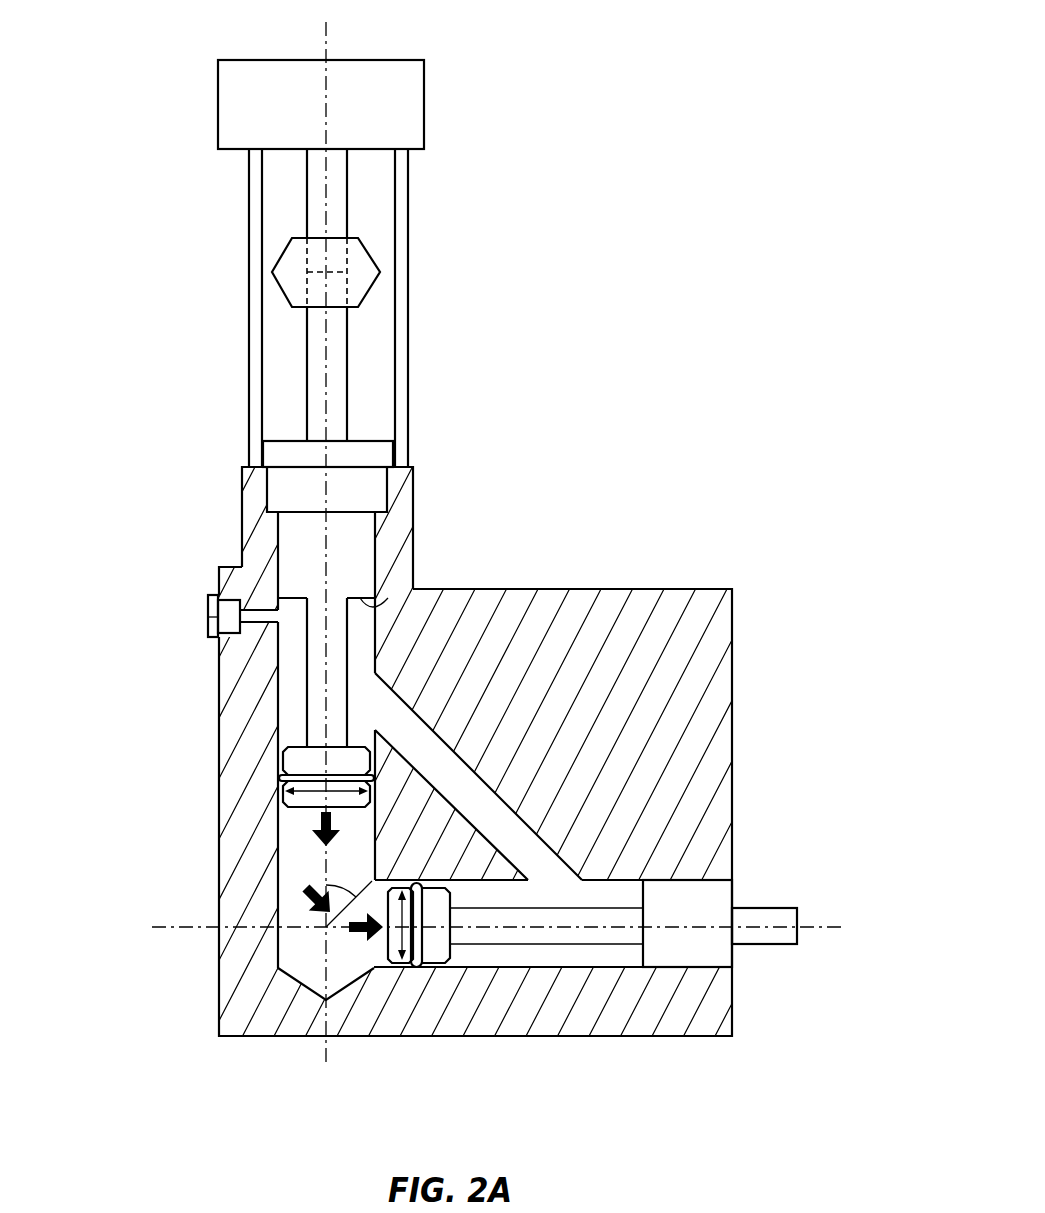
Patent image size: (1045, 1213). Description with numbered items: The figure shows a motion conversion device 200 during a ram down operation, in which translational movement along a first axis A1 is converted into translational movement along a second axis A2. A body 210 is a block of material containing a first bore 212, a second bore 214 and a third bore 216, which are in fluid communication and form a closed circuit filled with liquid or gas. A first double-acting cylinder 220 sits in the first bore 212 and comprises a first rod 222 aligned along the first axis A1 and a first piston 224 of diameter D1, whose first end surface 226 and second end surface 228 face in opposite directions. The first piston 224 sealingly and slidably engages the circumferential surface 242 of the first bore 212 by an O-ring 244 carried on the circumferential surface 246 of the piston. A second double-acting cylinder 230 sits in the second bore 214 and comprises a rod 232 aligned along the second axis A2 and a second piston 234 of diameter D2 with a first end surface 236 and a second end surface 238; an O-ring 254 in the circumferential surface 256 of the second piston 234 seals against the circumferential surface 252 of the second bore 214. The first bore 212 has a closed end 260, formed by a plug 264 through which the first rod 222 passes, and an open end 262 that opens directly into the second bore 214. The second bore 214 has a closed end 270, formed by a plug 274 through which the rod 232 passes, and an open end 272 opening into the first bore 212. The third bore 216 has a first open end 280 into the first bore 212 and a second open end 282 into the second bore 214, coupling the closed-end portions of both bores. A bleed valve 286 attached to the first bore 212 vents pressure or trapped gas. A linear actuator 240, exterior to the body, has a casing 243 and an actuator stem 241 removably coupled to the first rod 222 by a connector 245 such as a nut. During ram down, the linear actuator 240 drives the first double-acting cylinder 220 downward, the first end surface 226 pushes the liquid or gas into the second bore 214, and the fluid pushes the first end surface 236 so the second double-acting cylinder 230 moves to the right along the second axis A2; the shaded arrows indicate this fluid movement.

The motion conversion device 200 is at (144, 432).
The body 210 is at (643, 589).
The first bore 212 is at (292, 882).
The second bore 214 is at (538, 969).
The third bore 216 is at (524, 589).
The first double-acting cylinder 220 is at (296, 708).
The first rod 222 is at (315, 372).
The first piston 224 is at (312, 778).
The first end surface 226 is at (303, 807).
The second end surface 228 is at (308, 742).
The second double-acting cylinder 230 is at (568, 956).
The rod 232 is at (632, 935).
The second piston 234 is at (415, 968).
The first end surface 236 is at (370, 970).
The second end surface 238 is at (456, 1008).
The linear actuator 240 is at (453, 92).
The actuator stem 241 is at (338, 206).
The circumferential surface 242 is at (283, 808).
The casing 243 is at (218, 104).
The O-ring 244 is at (284, 782).
The connector 245 is at (280, 257).
The circumferential surface 246 is at (303, 752).
The circumferential surface 252 is at (594, 962).
The O-ring 254 is at (406, 964).
The circumferential surface 256 is at (436, 964).
The closed end 260 is at (364, 603).
The open end 262 is at (300, 868).
The plug 264 is at (293, 526).
The closed end 270 is at (646, 880).
The open end 272 is at (322, 1003).
The plug 274 is at (722, 953).
The first open end 280 is at (392, 600).
The second open end 282 is at (646, 898).
The bleed valve 286 is at (212, 594).
The first axis A1 is at (328, 272).
The second axis A2 is at (180, 928).
The diameter D1 is at (287, 862).
The diameter D2 is at (398, 966).